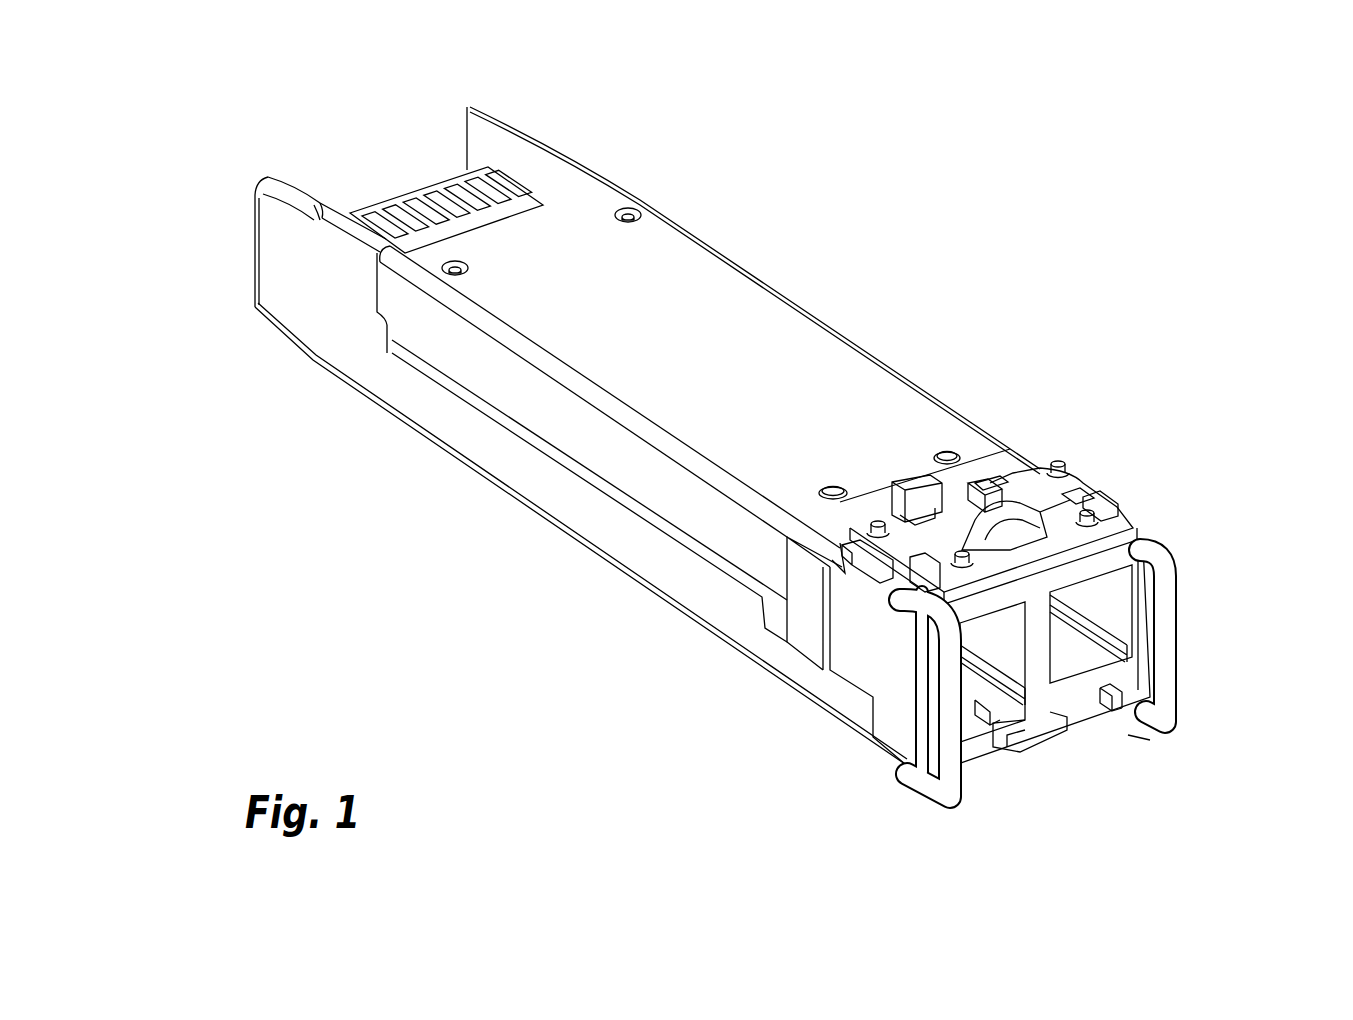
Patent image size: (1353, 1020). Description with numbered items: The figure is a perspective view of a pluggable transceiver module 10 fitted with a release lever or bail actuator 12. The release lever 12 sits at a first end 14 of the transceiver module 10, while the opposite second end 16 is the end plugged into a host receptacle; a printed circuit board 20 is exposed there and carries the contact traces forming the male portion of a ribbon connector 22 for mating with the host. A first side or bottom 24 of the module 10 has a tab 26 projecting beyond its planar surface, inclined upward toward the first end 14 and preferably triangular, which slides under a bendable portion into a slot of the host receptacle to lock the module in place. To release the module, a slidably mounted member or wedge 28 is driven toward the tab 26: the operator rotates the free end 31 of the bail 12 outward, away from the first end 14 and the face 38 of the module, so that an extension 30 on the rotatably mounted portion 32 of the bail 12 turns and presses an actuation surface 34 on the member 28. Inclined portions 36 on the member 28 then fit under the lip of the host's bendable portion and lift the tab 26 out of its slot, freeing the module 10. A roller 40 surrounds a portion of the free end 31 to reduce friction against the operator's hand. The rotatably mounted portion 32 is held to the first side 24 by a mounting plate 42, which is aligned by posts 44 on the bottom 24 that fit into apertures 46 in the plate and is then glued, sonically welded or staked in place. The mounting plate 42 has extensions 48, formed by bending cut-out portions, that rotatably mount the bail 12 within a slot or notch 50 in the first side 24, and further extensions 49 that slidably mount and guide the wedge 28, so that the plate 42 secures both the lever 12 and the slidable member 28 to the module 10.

The pluggable transceiver module 10 is at (985, 150).
The release lever or bail actuator 12 is at (1172, 605).
The first end 14 is at (1080, 772).
The second end 16 is at (237, 203).
The printed circuit board 20 is at (383, 208).
The male portion of a ribbon connector 22 is at (445, 200).
The first side or bottom 24 is at (723, 297).
The tab 26 is at (898, 480).
The slidably mounted member or wedge 28 is at (997, 483).
The extension 30 is at (1093, 488).
The free end 31 is at (900, 773).
The rotatably mounted portion 32 is at (1133, 522).
The actuation surface 34 is at (930, 490).
The inclined portions 36 is at (874, 524).
The face 38 is at (1043, 720).
The roller 40 is at (1093, 713).
The mounting plate 42 is at (1093, 490).
The posts 44 is at (1058, 465).
The apertures 46 is at (860, 505).
The extensions 48 is at (875, 556).
The extensions 49 is at (1017, 480).
The slot or notch 50 is at (890, 597).